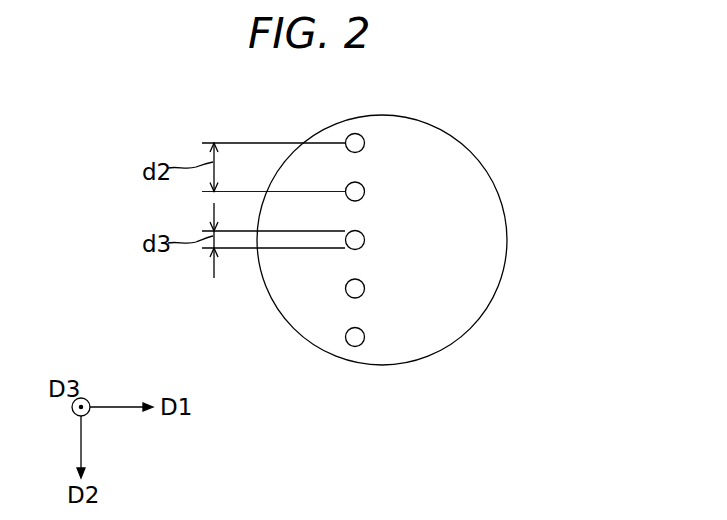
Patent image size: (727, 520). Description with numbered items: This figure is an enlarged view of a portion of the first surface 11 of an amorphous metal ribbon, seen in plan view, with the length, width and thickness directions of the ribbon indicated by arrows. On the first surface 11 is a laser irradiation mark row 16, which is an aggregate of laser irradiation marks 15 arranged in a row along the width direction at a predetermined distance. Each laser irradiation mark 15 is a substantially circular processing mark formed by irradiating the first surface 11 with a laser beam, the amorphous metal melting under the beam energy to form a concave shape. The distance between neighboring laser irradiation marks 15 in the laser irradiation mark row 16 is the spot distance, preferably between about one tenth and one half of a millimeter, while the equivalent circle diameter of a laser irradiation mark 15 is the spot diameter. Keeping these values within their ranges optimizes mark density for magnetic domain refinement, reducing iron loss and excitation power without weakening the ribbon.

The first surface 11 is at (492, 238).
The laser irradiation mark 15 is at (364, 189).
The laser irradiation mark row 16 is at (373, 138).